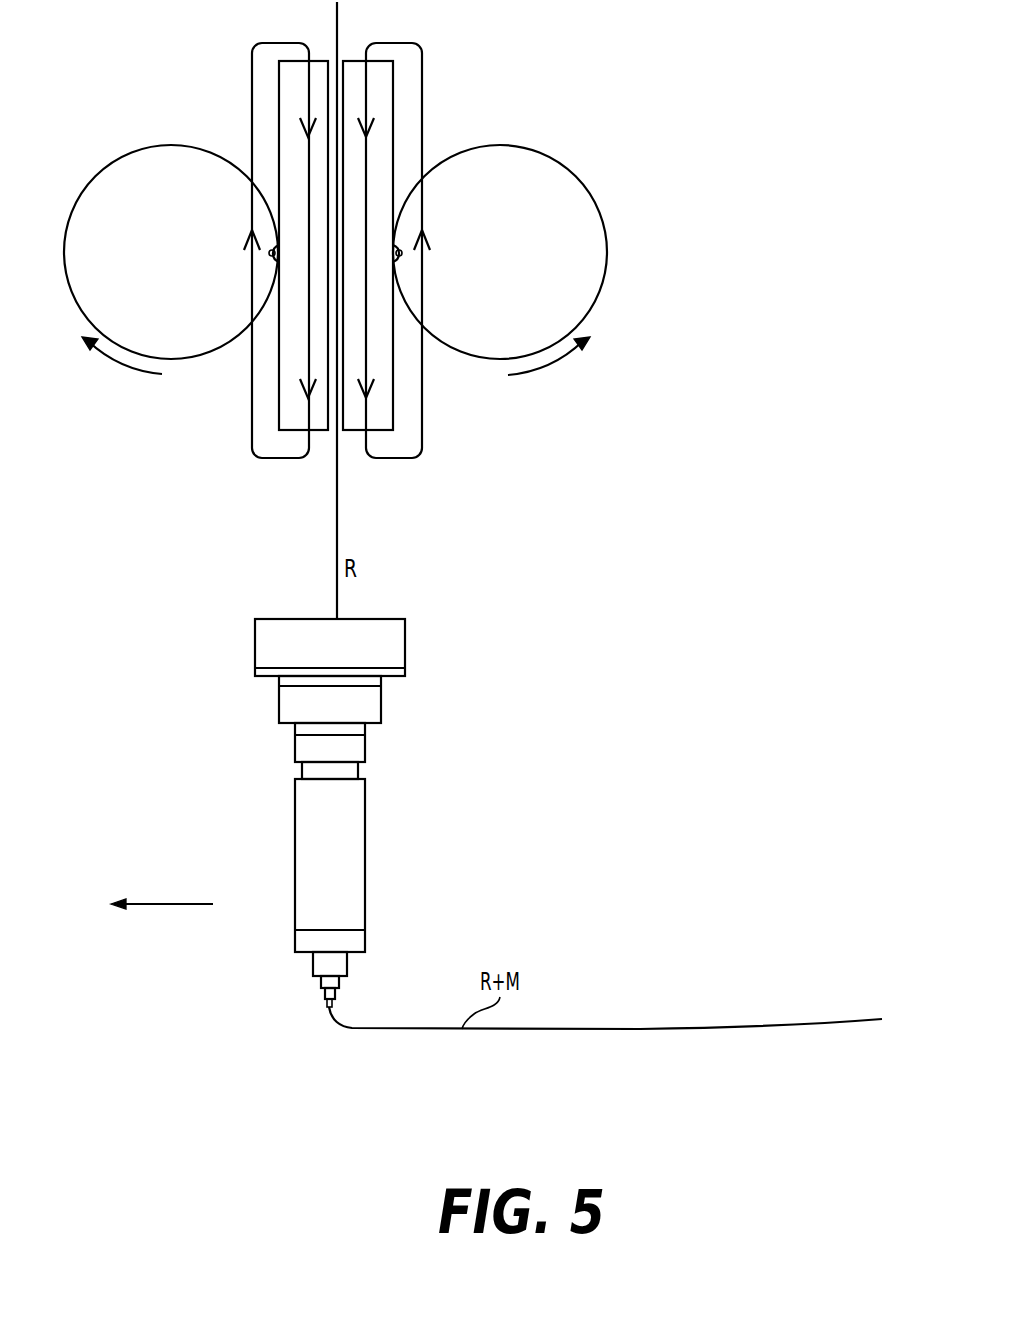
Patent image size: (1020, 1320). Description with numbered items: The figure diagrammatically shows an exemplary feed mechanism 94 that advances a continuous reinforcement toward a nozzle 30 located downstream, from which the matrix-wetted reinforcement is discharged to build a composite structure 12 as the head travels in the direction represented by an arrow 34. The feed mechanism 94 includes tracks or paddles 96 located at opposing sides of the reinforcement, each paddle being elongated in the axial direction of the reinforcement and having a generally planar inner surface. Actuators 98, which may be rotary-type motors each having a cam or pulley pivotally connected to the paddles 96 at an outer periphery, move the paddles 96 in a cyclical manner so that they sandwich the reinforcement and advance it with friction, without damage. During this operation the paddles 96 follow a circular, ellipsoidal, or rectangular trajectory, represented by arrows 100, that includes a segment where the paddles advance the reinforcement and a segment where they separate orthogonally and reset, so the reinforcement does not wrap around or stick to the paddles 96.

The composite structure 12 is at (867, 1019).
The nozzle 30 is at (340, 883).
The arrow 34 is at (173, 904).
The feed mechanism 94 is at (668, 238).
The paddles 96 is at (304, 365).
The actuators 98 is at (183, 272).
The arrows 100 is at (287, 458).